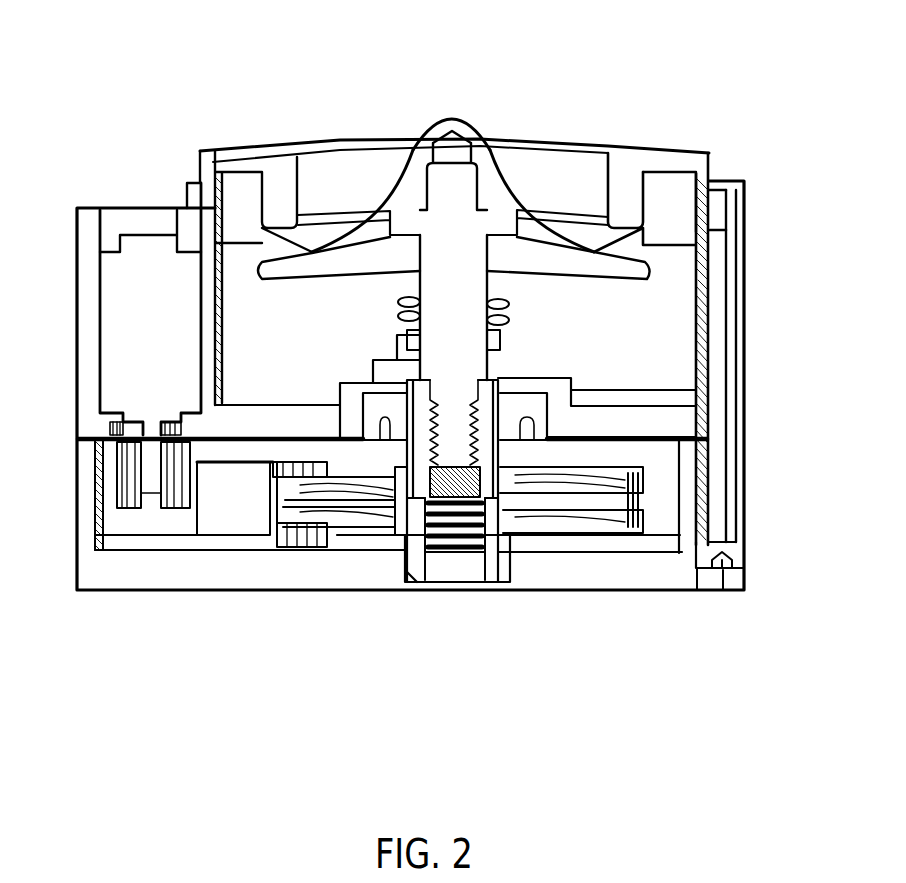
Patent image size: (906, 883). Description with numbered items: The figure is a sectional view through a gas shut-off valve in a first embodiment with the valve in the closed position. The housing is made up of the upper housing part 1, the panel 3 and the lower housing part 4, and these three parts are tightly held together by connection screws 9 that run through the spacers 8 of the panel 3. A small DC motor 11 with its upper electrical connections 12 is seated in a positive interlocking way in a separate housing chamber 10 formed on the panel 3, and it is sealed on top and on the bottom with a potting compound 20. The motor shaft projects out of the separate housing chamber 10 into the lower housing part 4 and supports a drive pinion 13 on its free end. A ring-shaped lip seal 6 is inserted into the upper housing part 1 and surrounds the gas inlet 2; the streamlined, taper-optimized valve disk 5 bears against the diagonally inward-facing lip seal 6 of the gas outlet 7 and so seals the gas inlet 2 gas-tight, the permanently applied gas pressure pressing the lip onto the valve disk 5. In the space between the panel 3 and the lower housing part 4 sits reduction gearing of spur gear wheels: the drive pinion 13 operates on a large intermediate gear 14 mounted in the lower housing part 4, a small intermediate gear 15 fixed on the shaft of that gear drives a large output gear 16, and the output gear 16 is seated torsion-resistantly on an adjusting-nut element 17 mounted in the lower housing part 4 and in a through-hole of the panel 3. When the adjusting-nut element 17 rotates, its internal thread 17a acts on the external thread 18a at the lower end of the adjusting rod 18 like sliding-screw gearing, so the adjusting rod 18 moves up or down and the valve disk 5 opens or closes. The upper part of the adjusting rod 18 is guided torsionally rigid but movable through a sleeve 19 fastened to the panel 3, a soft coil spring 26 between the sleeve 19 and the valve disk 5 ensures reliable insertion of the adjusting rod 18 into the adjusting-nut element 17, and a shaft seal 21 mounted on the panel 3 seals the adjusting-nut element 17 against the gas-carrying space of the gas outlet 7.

The upper housing part 1 is at (283, 185).
The gas inlet 2 is at (362, 135).
The panel 3 is at (640, 427).
The lower housing part 4 is at (653, 573).
The valve disk 5 is at (425, 132).
The lip seal 6 is at (668, 205).
The gas outlet 7 is at (278, 345).
The spacers 8 is at (745, 367).
The connection screws 9 is at (717, 310).
The separate housing chamber 10 is at (85, 226).
The small DC motor 11 is at (146, 257).
The electrical connections 12 is at (162, 223).
The drive pinion 13 is at (129, 487).
The large intermediate gear 14 is at (250, 450).
The small intermediate gear 15 is at (305, 547).
The output gear 16 is at (403, 507).
The adjusting-nut element 17 is at (487, 490).
The internal thread 17a is at (455, 540).
The adjusting rod 18 is at (455, 225).
The external thread 18a is at (477, 400).
The sleeve 19 is at (500, 372).
The potting compound 20 is at (200, 422).
The shaft seal 21 is at (370, 410).
The coil spring 26 is at (512, 307).